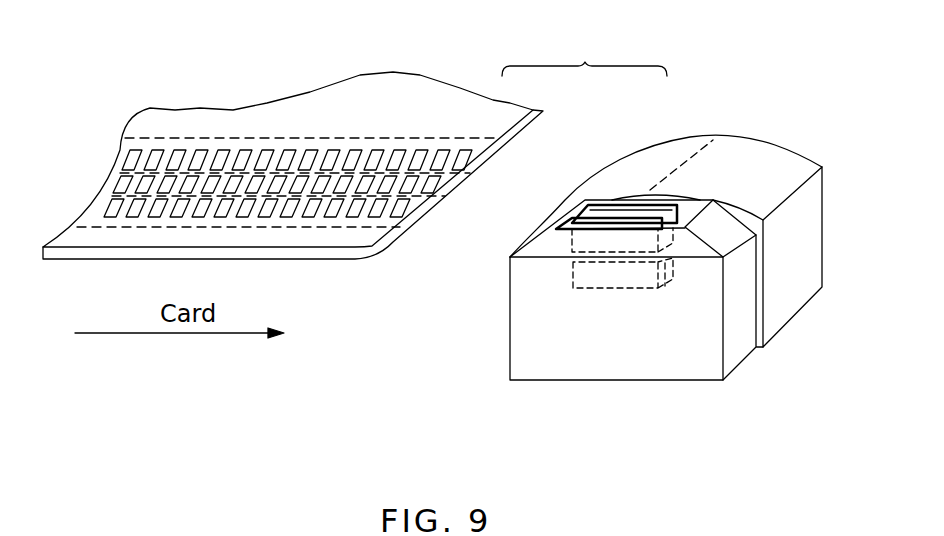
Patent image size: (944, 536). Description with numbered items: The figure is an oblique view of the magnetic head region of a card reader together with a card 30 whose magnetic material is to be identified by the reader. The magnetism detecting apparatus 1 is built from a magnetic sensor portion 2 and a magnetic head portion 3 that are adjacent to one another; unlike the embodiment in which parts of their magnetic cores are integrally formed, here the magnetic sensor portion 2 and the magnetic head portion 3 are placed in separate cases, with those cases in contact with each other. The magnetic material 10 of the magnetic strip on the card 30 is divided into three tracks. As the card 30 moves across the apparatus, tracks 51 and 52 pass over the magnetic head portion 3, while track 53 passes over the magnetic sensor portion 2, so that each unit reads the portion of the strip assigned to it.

The magnetism detecting apparatus 1 is at (619, 250).
The magnetic sensor portion 2 is at (518, 348).
The magnetic head portion 3 is at (762, 157).
The magnetic material 10 is at (478, 172).
The card 30 is at (357, 115).
The track 51 is at (140, 188).
The track 52 is at (122, 163).
The track 53 is at (112, 195).